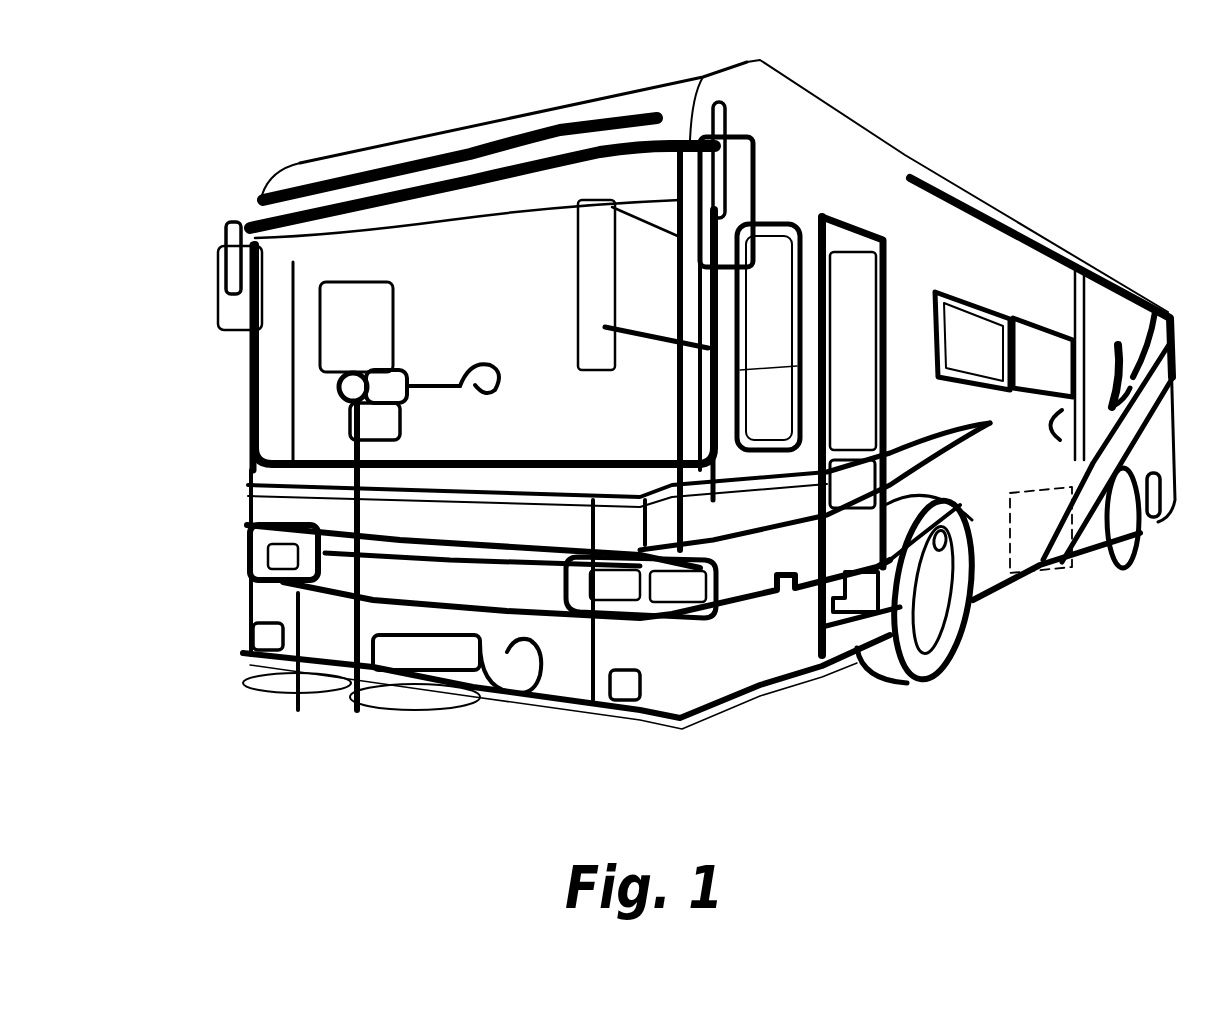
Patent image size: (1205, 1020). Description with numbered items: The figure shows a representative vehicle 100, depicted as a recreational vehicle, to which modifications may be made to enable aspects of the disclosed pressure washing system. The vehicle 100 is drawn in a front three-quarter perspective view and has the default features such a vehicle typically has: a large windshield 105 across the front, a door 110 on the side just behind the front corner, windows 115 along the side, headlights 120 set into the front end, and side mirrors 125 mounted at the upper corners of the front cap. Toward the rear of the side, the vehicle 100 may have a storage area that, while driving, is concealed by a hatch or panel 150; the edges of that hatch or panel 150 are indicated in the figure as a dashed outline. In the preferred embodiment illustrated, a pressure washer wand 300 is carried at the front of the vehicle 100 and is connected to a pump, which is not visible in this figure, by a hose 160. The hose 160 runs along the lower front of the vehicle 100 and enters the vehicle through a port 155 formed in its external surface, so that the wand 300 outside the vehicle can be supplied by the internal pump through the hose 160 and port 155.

The vehicle 100 is at (956, 262).
The windshield 105 is at (442, 273).
The door 110 is at (862, 253).
The windows 115 is at (983, 302).
The headlights 120 is at (660, 583).
The side mirrors 125 is at (212, 262).
The hatch or panel 150 is at (1010, 497).
The port 155 is at (527, 650).
The hose 160 is at (397, 700).
The pressure washer wand 300 is at (352, 393).